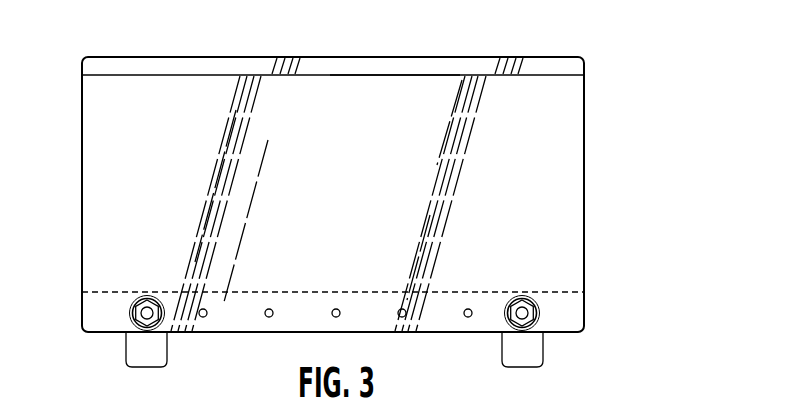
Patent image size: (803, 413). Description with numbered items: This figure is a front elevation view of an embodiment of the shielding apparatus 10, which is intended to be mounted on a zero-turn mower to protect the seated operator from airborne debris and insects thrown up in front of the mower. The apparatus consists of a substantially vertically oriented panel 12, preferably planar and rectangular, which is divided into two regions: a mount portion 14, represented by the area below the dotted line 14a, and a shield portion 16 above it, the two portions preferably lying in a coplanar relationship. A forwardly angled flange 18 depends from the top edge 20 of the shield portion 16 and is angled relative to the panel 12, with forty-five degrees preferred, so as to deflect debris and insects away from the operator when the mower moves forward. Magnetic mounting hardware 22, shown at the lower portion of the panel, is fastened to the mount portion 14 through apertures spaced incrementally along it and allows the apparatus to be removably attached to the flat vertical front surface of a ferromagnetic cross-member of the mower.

The shielding apparatus 10 is at (613, 62).
The panel 12 is at (585, 180).
The mount portion 14 is at (590, 292).
The dotted line 14a is at (540, 288).
The shield portion 16 is at (81, 75).
The forwardly angled flange 18 is at (333, 70).
The top edge 20 is at (393, 75).
The magnetic mounting hardware 22 is at (147, 367).